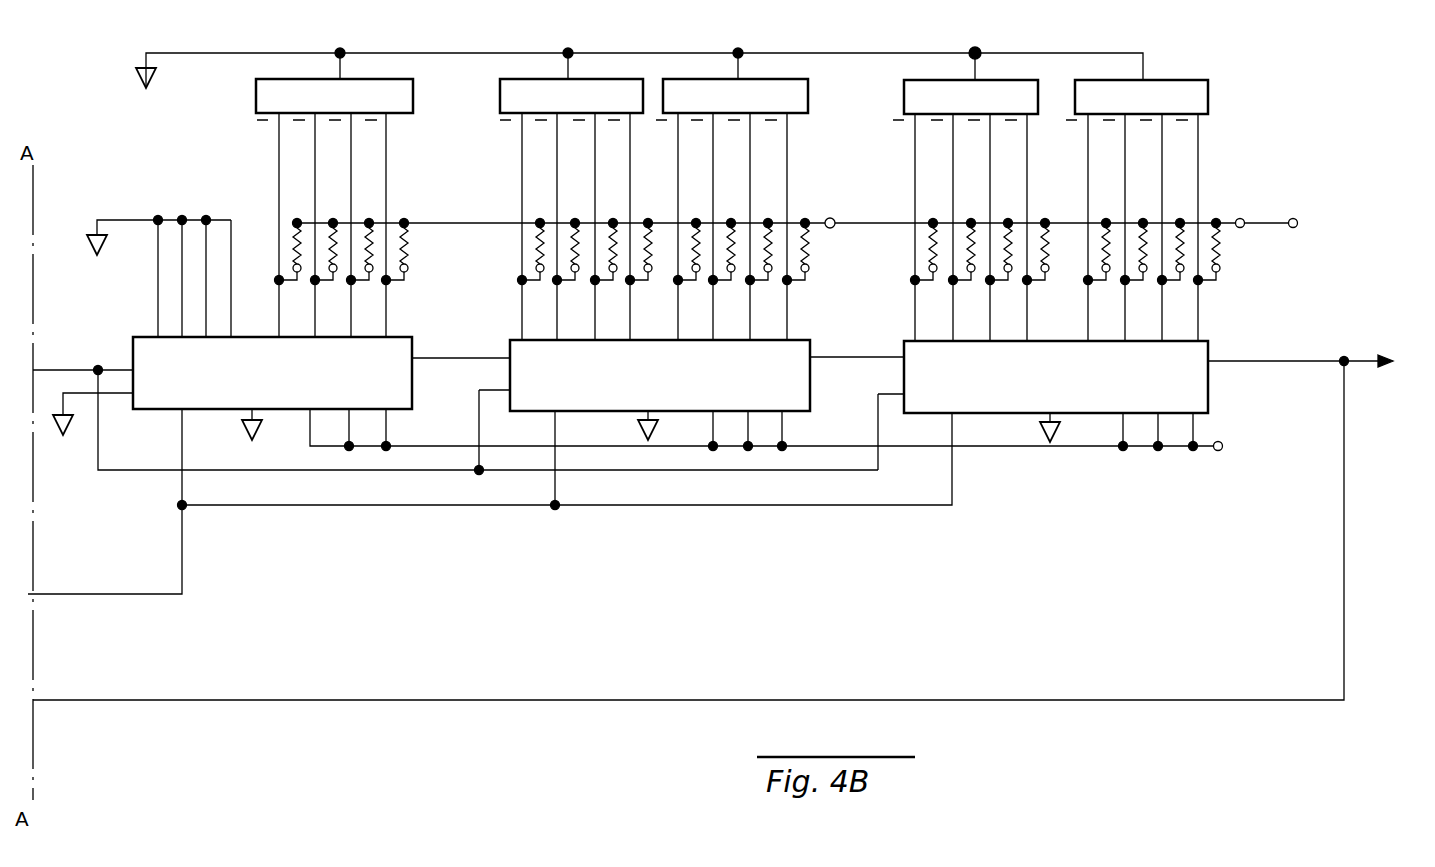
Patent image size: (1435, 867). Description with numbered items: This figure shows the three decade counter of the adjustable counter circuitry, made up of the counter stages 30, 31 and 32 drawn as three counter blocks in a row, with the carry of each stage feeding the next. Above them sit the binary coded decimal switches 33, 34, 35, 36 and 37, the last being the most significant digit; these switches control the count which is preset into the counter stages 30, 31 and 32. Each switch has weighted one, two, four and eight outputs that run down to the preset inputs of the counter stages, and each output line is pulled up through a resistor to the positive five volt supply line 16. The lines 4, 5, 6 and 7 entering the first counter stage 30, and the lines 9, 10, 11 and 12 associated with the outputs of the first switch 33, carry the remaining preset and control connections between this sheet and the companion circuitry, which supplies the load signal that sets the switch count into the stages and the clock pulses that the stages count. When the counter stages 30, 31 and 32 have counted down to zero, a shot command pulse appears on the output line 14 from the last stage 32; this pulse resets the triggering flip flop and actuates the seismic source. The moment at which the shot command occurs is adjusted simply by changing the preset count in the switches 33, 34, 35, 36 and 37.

The counter stage 30 is at (402, 348).
The counter stage 31 is at (808, 351).
The counter stage 32 is at (1198, 346).
The binary coded decimal switch 33 is at (355, 204).
The binary coded decimal switch 34 is at (600, 80).
The binary coded decimal switch 35 is at (808, 86).
The binary coded decimal switch 36 is at (1005, 81).
The binary coded decimal switch 37 is at (1200, 82).
The shot command line 14 is at (713, 504).
The +5V supply line 16 is at (830, 237).
The input line 4 is at (146, 278).
The input line 5 is at (171, 278).
The input line 6 is at (196, 278).
The input line 7 is at (221, 278).
The BCD line 9 is at (395, 225).
The BCD line 10 is at (364, 225).
The BCD line 11 is at (328, 225).
The BCD line 12 is at (290, 225).